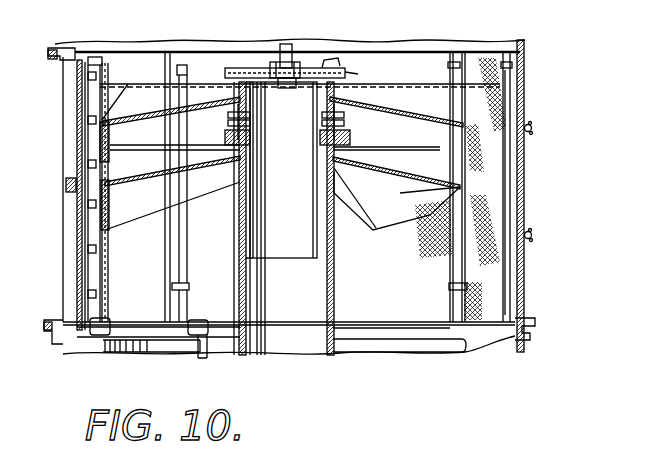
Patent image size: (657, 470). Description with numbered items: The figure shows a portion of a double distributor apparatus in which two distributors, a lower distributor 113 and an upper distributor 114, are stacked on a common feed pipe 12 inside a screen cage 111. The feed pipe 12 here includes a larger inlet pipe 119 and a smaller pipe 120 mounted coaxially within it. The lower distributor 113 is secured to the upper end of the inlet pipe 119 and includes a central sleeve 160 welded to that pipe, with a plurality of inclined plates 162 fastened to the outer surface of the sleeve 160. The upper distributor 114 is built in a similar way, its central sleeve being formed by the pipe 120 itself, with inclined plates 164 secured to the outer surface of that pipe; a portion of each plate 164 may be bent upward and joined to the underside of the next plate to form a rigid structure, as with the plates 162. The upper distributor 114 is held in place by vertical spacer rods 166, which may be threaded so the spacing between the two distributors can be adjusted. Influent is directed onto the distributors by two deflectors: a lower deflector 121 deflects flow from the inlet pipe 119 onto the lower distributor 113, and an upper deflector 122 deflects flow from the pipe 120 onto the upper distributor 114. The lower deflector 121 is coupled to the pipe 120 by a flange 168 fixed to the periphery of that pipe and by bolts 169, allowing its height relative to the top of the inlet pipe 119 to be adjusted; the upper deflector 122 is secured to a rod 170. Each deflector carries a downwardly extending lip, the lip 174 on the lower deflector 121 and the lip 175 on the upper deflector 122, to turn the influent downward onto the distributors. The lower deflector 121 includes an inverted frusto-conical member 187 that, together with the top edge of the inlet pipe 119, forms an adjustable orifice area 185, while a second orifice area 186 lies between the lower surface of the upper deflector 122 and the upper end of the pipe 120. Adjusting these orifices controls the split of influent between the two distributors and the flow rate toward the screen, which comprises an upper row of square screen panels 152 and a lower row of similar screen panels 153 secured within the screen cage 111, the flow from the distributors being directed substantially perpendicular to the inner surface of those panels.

The feed pipe 12 is at (237, 265).
The screen cage 111 is at (492, 54).
The lower distributor 113 is at (152, 129).
The upper distributor 114 is at (151, 80).
The inlet pipe 119 is at (240, 243).
The coaxially mounted pipe 120 is at (300, 247).
The lower deflector 121 is at (336, 137).
The upper deflector 122 is at (348, 62).
The upper screen panels 152 is at (497, 88).
The lower screen panels 153 is at (500, 213).
The central sleeve 160 is at (343, 173).
The inclined plates 162 is at (147, 167).
The inclined plates 164 is at (125, 107).
The vertical spacer rods 166 is at (113, 144).
The flange 168 is at (258, 153).
The bolts 169 is at (253, 112).
The rod 170 is at (288, 62).
The downwardly extending lip 174 is at (347, 140).
The downwardly extending lip 175 is at (355, 75).
The adjustable orifice area 185 is at (266, 152).
The orifice area 186 is at (260, 77).
The inverted frusto-conical member 187 is at (268, 203).